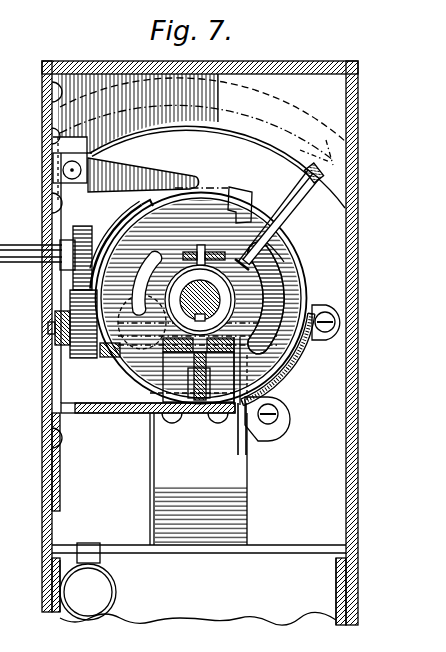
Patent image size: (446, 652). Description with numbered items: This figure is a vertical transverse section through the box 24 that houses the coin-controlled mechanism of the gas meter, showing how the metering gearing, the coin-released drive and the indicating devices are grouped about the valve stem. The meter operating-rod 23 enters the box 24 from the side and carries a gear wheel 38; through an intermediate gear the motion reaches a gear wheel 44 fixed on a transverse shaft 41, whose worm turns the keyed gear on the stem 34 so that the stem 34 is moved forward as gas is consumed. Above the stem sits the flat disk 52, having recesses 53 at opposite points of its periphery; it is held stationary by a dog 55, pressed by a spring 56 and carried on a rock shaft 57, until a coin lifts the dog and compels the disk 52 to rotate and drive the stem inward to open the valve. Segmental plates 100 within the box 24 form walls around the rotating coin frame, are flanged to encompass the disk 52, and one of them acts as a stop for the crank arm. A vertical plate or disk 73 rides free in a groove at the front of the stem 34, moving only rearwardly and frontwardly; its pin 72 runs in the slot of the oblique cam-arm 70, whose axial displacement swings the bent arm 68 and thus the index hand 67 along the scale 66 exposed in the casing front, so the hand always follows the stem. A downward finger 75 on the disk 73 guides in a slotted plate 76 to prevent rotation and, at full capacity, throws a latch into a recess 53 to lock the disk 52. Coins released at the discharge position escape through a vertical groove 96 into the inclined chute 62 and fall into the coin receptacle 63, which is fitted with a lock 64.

The meter operating-rod 23 is at (40, 262).
The box 24 is at (352, 521).
The stem 34 is at (272, 291).
The gear wheel 38 is at (82, 248).
The shaft 41 is at (56, 333).
The gear wheel 44 is at (84, 360).
The disk 52 is at (280, 252).
The recesses 53 is at (259, 220).
The dog 55 is at (240, 188).
The spring 56 is at (172, 166).
The rock shaft 57 is at (62, 171).
The chute 62 is at (250, 516).
The coin receptacle 63 is at (203, 591).
The lock 64 is at (88, 592).
The scale 66 is at (262, 114).
The index hand 67 is at (330, 158).
The bent arm 68 is at (298, 203).
The cam-arm 70 is at (270, 268).
The pin 72 is at (200, 248).
The disk 73 is at (149, 283).
The finger 75 is at (185, 360).
The slotted plate 76 is at (245, 368).
The groove 96 is at (248, 442).
The segmental plates 100 is at (298, 381).